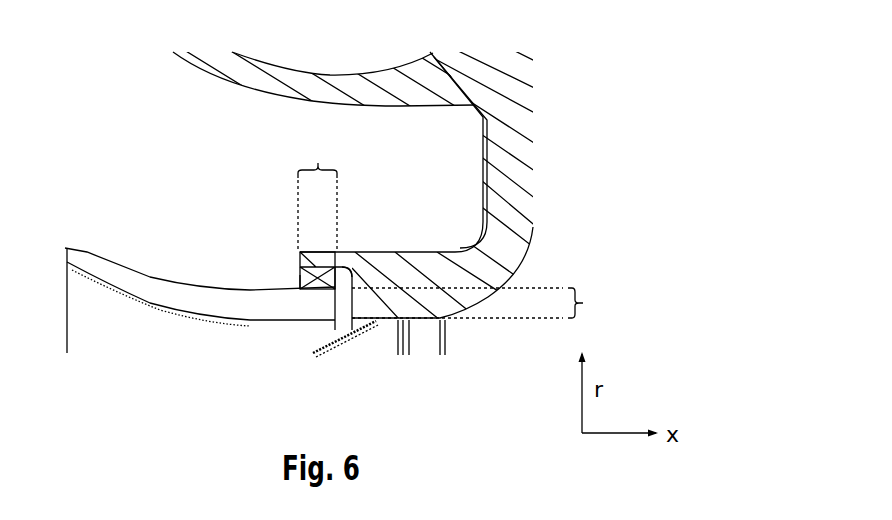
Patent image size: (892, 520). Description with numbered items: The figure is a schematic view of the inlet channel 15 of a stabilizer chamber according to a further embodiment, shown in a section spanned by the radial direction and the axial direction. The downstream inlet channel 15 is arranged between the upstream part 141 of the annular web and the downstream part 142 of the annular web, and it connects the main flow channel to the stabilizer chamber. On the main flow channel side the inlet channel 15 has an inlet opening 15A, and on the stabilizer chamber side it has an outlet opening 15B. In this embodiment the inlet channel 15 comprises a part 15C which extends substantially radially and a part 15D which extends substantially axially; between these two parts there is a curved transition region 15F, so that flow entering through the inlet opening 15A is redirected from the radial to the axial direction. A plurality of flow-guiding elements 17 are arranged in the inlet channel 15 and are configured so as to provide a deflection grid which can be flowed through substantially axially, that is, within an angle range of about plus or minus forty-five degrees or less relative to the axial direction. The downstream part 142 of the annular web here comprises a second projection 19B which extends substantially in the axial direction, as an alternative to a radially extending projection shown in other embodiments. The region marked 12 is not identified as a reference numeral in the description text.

The flow channel 12 is at (182, 160).
The upstream part of the annular web 141 is at (145, 287).
The downstream part of the annular web 142 is at (438, 263).
The flow-guiding elements 17 is at (293, 273).
The second projection which extends substantially in the axial direction 19B is at (304, 253).
The inlet channel of the stabilizer chamber 15 is at (340, 300).
The inlet opening of the inlet channel on the main flow channel side 15A is at (343, 333).
The outlet opening of the inlet channel on the stabilizer chamber side 15B is at (296, 277).
The part of the inlet channel which extends substantially radially 15C is at (490, 303).
The part of the inlet channel which extends substantially axially 15D is at (318, 194).
The transition region 15F is at (349, 259).